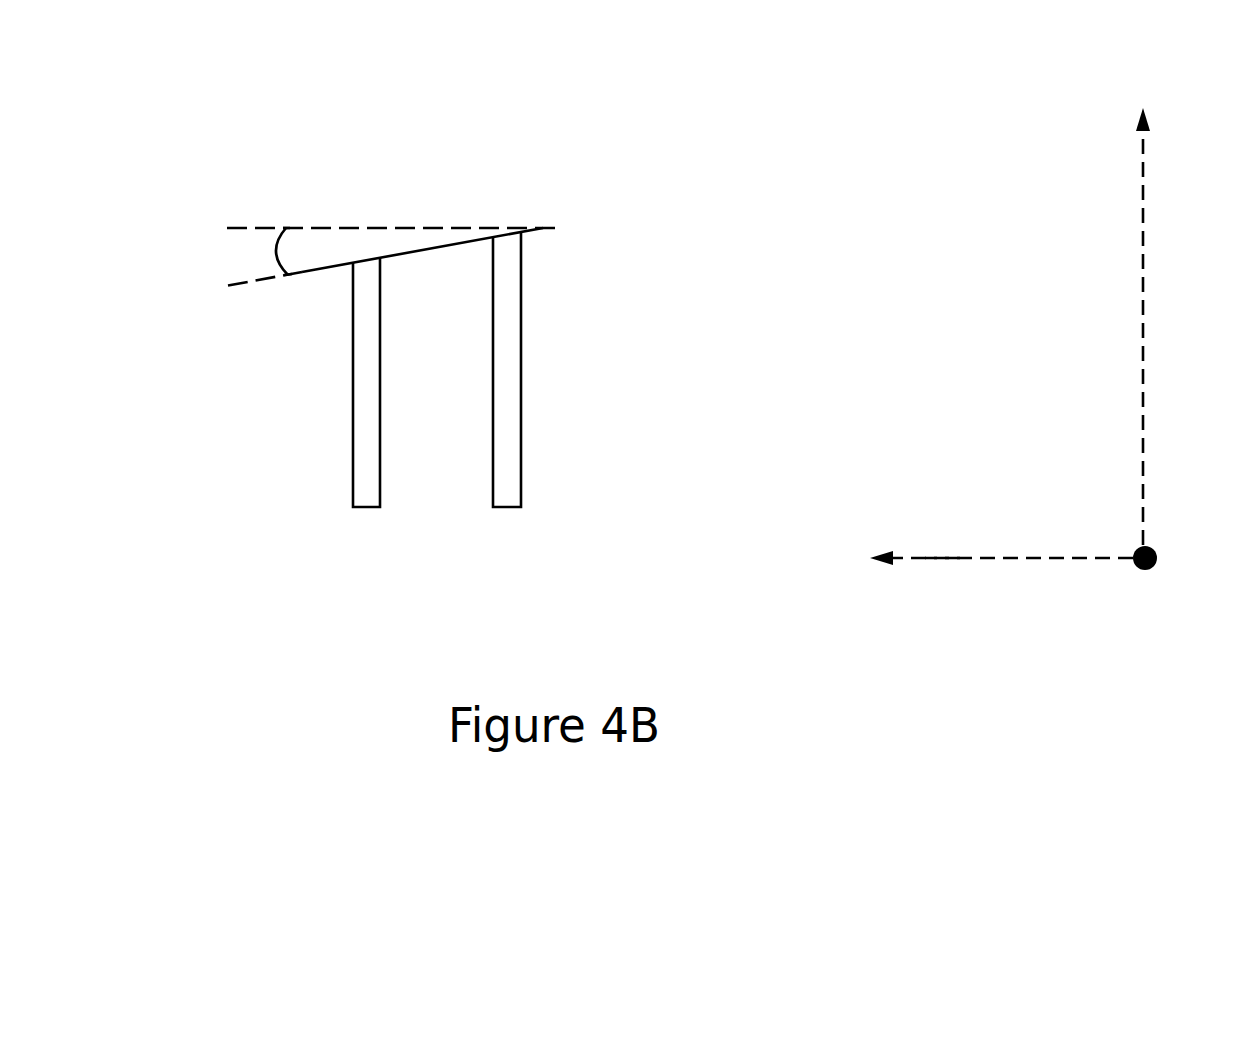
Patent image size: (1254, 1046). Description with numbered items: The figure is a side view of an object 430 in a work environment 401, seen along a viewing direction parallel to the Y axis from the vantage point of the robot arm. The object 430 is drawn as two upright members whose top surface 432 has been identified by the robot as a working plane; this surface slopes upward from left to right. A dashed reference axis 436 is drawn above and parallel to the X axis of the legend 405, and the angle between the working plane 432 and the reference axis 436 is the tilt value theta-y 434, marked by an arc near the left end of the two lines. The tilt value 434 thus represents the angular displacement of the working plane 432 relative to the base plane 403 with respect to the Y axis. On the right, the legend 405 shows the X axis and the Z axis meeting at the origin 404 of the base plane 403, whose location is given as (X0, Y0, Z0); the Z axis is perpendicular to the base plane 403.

The work environment 401 is at (897, 341).
The base plane 403 is at (983, 567).
The origin 404 is at (1152, 572).
The legend 405 is at (943, 568).
The object 430 is at (512, 490).
The top surface 432 is at (445, 247).
The tilt value 434 is at (283, 231).
The reference axis 436 is at (383, 225).